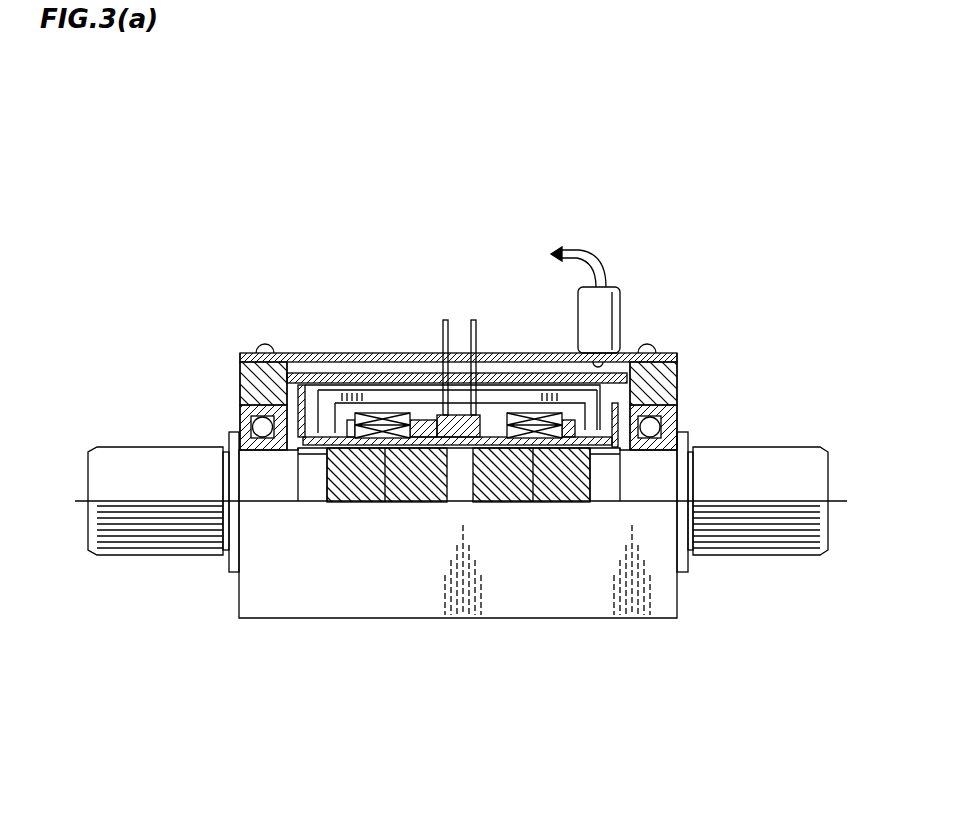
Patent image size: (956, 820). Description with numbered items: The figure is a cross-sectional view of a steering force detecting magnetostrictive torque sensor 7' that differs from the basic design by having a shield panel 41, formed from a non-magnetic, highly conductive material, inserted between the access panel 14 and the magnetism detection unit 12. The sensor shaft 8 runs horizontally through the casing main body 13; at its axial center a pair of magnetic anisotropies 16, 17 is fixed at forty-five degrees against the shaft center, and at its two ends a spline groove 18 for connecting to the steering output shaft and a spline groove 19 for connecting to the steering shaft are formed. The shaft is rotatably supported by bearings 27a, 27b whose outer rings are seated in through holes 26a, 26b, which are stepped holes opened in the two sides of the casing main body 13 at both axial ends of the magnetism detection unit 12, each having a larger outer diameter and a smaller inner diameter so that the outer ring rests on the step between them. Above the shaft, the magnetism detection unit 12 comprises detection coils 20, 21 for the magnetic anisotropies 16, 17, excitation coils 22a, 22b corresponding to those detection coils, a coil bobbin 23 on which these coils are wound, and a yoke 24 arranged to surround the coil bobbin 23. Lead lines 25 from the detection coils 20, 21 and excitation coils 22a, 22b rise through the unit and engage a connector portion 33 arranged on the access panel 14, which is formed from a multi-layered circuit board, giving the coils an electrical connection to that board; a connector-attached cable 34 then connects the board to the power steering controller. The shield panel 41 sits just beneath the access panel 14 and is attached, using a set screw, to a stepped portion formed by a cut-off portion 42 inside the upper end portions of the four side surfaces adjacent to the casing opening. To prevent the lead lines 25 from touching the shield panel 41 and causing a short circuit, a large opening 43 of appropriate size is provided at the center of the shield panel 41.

The steering force detecting magnetostrictive torque sensor 7' is at (458, 256).
The sensor shaft 8 is at (460, 617).
The magnetism detection unit 12 is at (312, 490).
The casing main body 13 is at (248, 595).
The access panel 14 is at (348, 353).
The magnetic anisotropy 16 is at (381, 477).
The magnetic anisotropy 17 is at (558, 485).
The spline groove 18 is at (162, 548).
The spline groove 19 is at (774, 547).
The detection coil 20 is at (402, 440).
The detection coil 21 is at (533, 448).
The excitation coil 22a is at (371, 412).
The excitation coil 22b is at (530, 412).
The coil bobbin 23 is at (303, 395).
The yoke 24 is at (398, 398).
The lead lines 25 is at (432, 317).
The through hole 26a is at (238, 415).
The through hole 26b is at (678, 405).
The bearing 27a is at (240, 425).
The bearing 27b is at (675, 425).
The connector portion 33 is at (480, 351).
The connector-attached cable 34 is at (612, 290).
The shield panel 41 is at (335, 395).
The cut-off portion 42 is at (290, 357).
The opening 43 is at (442, 413).